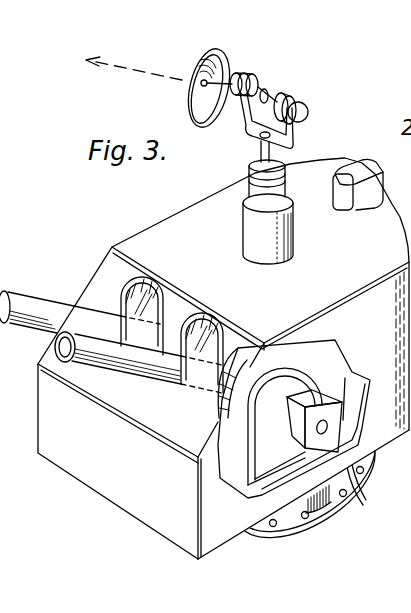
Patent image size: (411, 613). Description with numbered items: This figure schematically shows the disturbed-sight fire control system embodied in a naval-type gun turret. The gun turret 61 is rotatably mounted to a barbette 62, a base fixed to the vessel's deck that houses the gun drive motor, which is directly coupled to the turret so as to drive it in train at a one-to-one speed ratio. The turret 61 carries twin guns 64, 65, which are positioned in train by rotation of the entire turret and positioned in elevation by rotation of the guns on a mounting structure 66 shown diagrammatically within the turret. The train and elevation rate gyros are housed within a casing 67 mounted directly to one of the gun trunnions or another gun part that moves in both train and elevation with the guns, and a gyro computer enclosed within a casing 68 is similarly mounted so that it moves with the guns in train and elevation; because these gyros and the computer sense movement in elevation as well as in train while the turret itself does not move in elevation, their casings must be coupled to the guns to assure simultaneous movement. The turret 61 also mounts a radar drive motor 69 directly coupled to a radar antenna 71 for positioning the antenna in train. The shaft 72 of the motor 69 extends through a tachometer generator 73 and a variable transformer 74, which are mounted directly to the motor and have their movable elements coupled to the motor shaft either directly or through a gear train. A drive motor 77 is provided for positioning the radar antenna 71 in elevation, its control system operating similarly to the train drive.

The gun turret 61 is at (104, 478).
The barbette 62 is at (259, 534).
The gun 64 is at (22, 299).
The gun 65 is at (55, 343).
The mounting structure 66 is at (297, 372).
The casing 67 is at (283, 426).
The casing 68 is at (293, 435).
The radar drive motor 69 is at (291, 200).
The radar antenna 71 is at (205, 53).
The shaft 72 is at (260, 150).
The tachometer generator 73 is at (258, 186).
The variable transformer 74 is at (288, 200).
The drive motor 77 is at (299, 101).